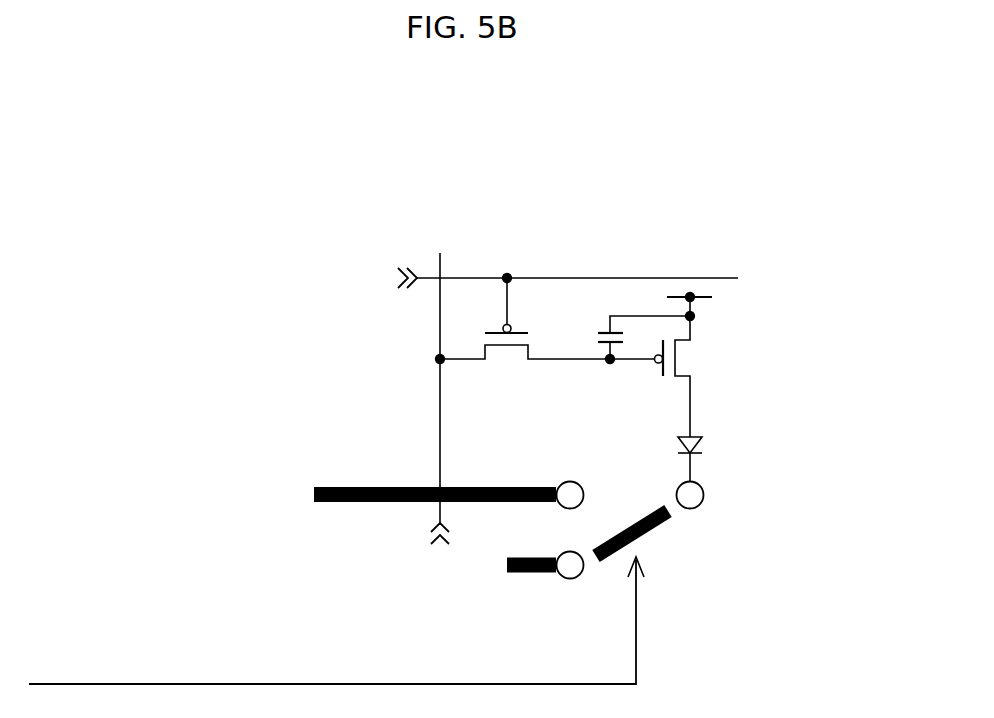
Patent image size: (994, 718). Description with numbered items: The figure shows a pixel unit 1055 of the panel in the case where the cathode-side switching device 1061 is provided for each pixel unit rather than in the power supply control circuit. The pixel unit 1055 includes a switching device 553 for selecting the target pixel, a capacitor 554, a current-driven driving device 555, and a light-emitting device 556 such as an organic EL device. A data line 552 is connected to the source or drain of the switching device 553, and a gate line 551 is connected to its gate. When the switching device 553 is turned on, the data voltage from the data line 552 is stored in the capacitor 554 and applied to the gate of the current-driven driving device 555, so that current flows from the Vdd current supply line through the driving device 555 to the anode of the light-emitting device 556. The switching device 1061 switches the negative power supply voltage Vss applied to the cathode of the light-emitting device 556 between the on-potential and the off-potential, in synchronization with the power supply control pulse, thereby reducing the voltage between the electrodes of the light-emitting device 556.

The gate line 551 is at (738, 279).
The data line 552 is at (440, 253).
The switching device 553 is at (507, 364).
The capacitor 554 is at (597, 345).
The current-driven driving device 555 is at (676, 357).
The light-emitting device 556 is at (702, 441).
The pixel unit 1055 is at (711, 204).
The switching device 1061 is at (699, 508).